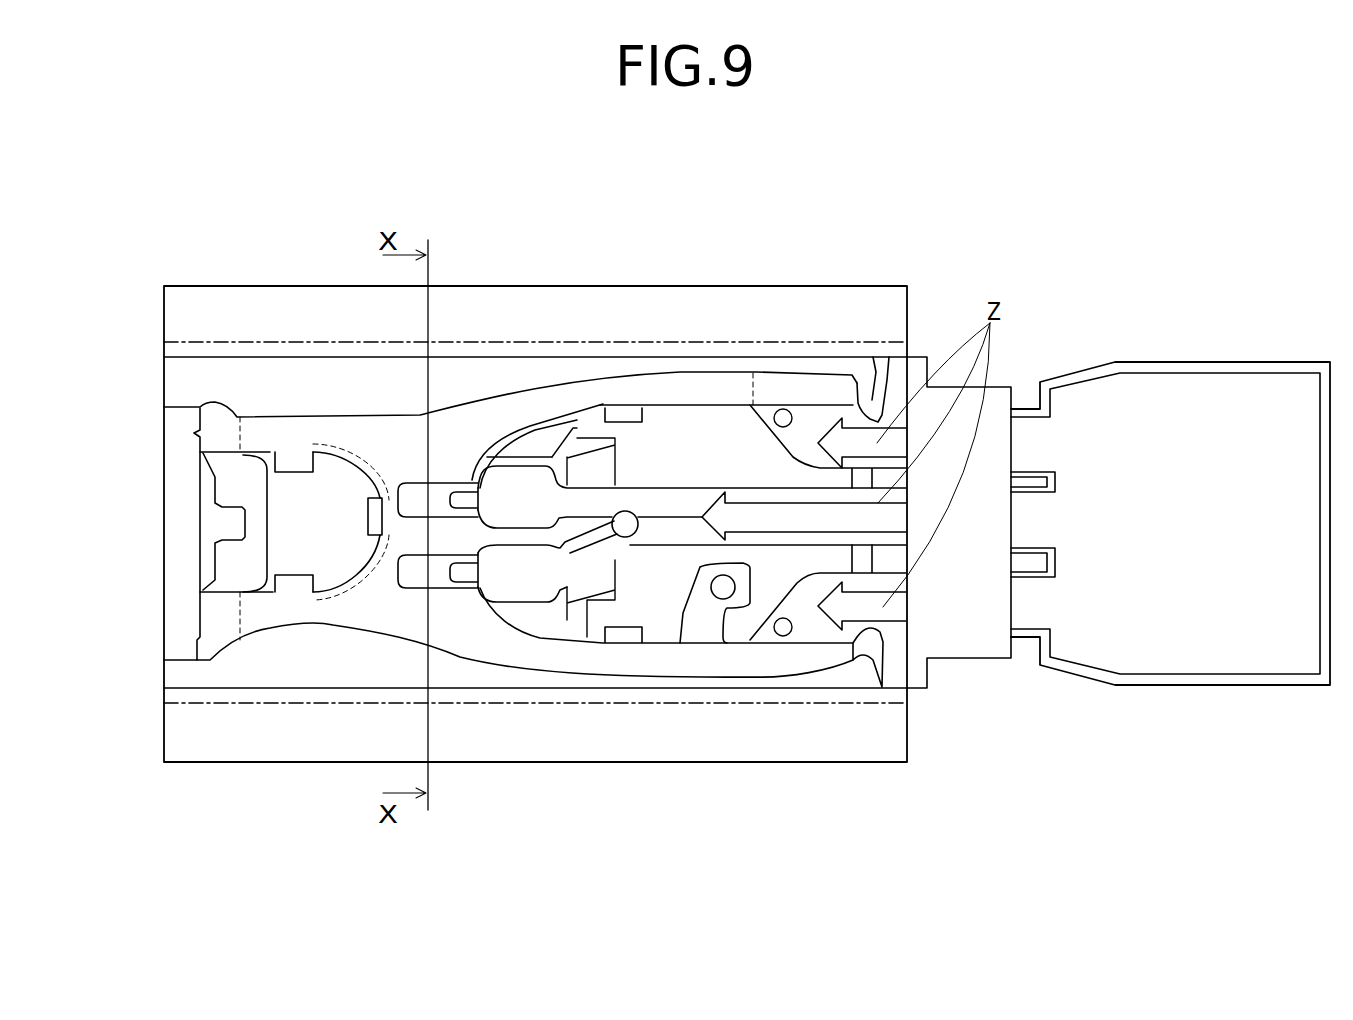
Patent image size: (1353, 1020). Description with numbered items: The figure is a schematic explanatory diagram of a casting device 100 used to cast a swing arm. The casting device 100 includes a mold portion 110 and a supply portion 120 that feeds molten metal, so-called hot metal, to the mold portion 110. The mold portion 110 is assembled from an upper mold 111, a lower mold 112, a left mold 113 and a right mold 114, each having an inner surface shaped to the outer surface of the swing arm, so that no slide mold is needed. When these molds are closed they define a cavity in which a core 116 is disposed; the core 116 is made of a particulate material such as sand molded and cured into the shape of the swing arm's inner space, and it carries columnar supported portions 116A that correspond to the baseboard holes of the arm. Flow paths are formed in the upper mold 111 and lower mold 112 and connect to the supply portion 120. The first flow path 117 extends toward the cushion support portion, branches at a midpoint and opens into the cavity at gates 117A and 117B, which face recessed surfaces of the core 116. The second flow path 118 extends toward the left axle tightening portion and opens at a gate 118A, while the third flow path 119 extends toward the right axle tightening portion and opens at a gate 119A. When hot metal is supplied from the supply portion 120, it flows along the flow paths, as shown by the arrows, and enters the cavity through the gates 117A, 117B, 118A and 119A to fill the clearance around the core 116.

The casting device 100 is at (778, 177).
The mold portion 110 is at (626, 273).
The upper mold 111 is at (165, 600).
The lower mold 112 is at (200, 515).
The left mold 113 is at (250, 303).
The right mold 114 is at (237, 742).
The core 116 is at (405, 433).
The supported portion 116A is at (367, 517).
The first flow path 117 is at (727, 647).
The gate 117A is at (460, 483).
The gate 117B is at (460, 587).
The second flow path 118 is at (883, 415).
The gate 118A is at (807, 405).
The third flow path 119 is at (887, 632).
The gate 119A is at (803, 645).
The supply portion 120 is at (1206, 343).